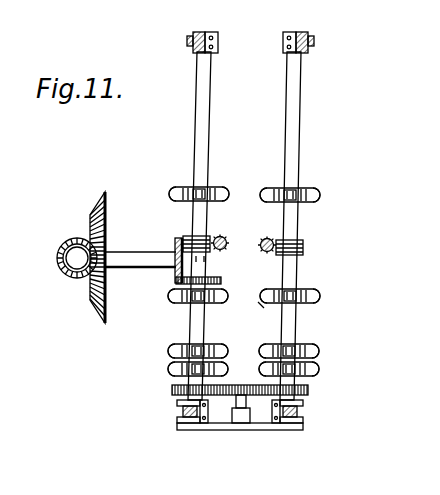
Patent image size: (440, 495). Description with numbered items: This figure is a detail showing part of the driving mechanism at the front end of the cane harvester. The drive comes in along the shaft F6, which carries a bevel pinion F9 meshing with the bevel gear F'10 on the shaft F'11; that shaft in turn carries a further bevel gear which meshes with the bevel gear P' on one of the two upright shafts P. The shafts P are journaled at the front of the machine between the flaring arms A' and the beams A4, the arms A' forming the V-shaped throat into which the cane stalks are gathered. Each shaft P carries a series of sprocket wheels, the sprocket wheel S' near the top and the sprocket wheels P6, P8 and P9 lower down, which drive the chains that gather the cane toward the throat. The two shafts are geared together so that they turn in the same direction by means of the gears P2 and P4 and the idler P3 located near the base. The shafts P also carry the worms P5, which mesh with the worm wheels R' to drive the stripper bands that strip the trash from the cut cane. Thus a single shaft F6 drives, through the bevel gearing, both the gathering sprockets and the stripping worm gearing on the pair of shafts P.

The beam A4 is at (283, 33).
The shafts P is at (244, 226).
The sprocket wheel S' is at (244, 184).
The worms P5 is at (266, 237).
The worm wheels R' is at (219, 261).
The bevel gear P' is at (244, 285).
The sprocket wheel P9 is at (224, 302).
The sprocket wheel P8 is at (271, 347).
The sprocket wheel P6 is at (170, 355).
The gear P2 is at (172, 384).
The gear P4 is at (306, 394).
The flaring arms A' is at (262, 428).
The idler P3 is at (248, 398).
The shaft F'11 is at (143, 251).
The bevel gear F'10 is at (134, 197).
The bevel pinion F9 is at (62, 240).
The shaft F6 is at (75, 262).